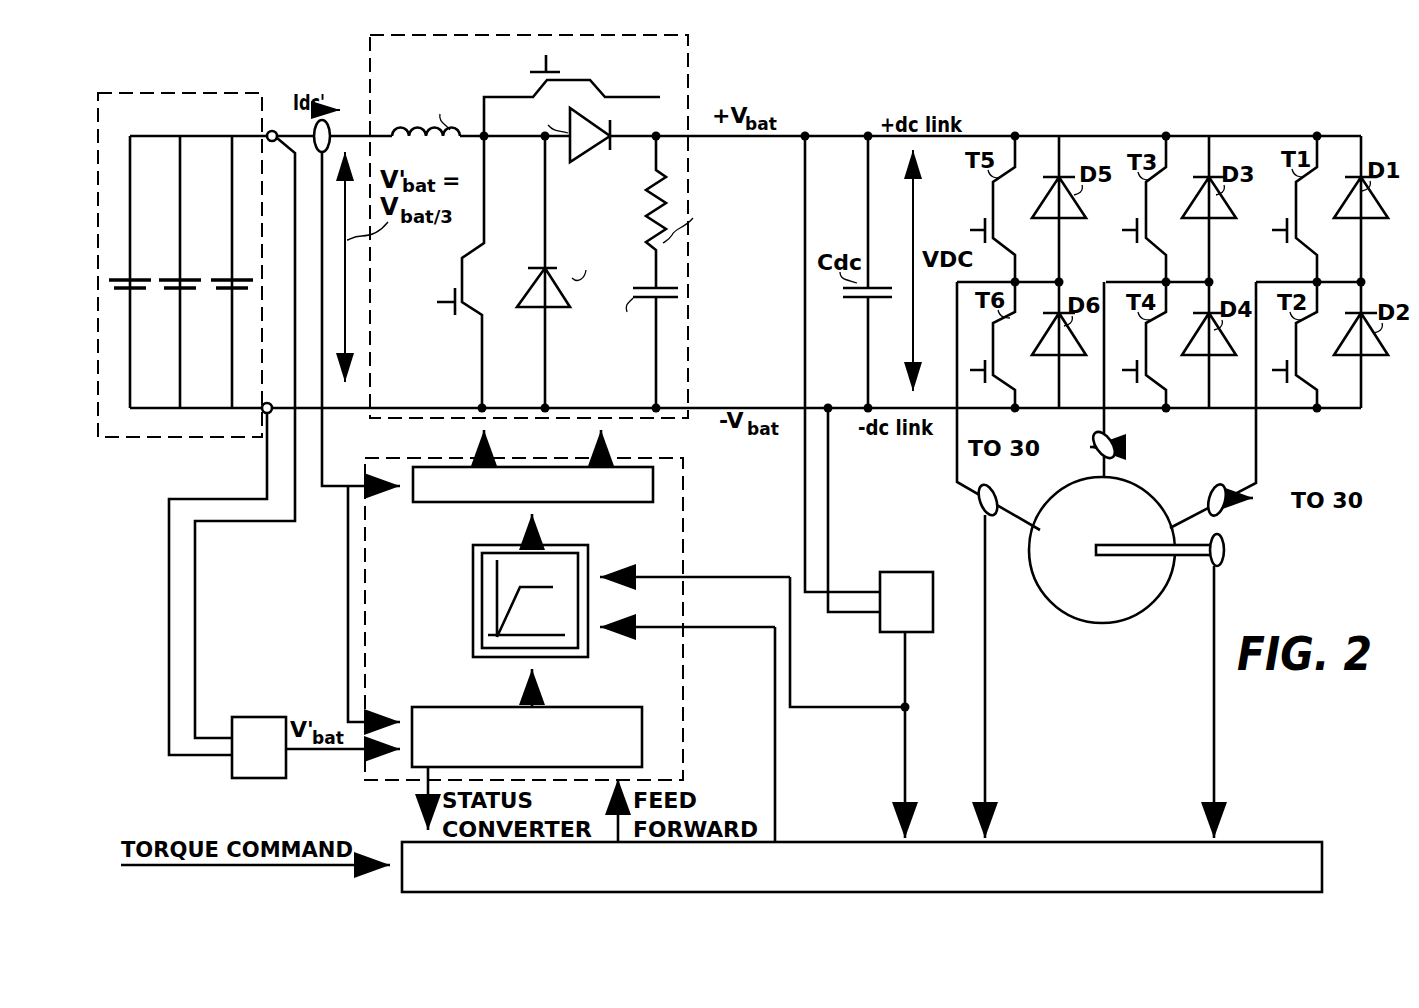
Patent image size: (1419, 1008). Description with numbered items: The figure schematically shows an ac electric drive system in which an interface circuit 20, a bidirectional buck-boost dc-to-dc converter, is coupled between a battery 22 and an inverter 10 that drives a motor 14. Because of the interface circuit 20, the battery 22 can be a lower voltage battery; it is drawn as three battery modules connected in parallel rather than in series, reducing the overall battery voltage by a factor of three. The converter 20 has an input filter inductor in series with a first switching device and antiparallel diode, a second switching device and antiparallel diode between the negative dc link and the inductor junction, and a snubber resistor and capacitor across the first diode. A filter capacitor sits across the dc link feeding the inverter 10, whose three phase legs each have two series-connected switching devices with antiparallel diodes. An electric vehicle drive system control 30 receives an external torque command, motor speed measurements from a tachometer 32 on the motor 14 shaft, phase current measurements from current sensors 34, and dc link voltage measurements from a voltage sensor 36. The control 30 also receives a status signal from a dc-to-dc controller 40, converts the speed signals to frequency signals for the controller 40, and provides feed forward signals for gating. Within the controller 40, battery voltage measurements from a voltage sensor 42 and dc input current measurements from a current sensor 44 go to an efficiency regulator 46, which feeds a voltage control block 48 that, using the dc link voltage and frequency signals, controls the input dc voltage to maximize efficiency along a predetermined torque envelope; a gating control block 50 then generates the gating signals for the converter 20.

The inverter 10 is at (1308, 84).
The motor 14 is at (1112, 593).
The interface circuit 20 is at (688, 38).
The battery 22 is at (131, 93).
The electric vehicle drive system control 30 is at (1275, 842).
The tachometer 32 is at (1210, 568).
The current sensors 34 is at (983, 510).
The voltage sensor 36 is at (905, 572).
The dc-to-dc controller 40 is at (683, 513).
The voltage sensor 42 is at (314, 128).
The current sensor 44 is at (256, 717).
The efficiency regulator 46 is at (600, 707).
The voltage control block 48 is at (605, 550).
The gating control block 50 is at (645, 463).